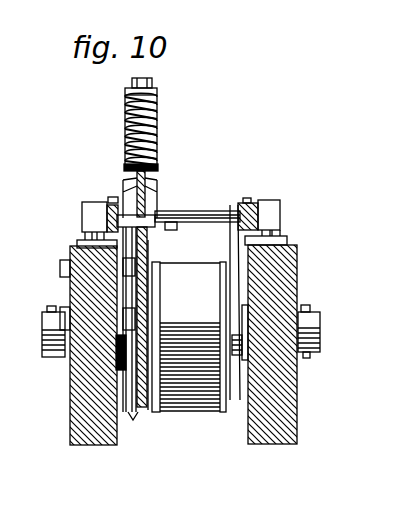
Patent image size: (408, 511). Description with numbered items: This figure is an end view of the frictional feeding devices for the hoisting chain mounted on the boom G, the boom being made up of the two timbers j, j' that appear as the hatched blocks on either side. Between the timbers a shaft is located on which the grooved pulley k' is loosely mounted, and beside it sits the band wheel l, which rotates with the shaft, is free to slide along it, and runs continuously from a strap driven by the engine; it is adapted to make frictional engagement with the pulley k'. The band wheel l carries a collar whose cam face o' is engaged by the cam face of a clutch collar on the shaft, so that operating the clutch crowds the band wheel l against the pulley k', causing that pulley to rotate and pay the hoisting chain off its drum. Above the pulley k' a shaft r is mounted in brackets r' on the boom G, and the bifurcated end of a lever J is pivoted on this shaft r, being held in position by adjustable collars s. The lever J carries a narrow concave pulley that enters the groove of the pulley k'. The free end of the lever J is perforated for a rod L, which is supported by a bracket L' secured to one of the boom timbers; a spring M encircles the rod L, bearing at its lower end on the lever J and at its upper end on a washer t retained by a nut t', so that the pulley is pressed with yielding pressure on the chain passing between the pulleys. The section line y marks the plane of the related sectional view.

The nut t' is at (144, 72).
The washer t is at (145, 84).
The rod L is at (153, 129).
The spring M is at (137, 118).
The lever J is at (160, 197).
The adjustable collars s is at (114, 197).
The brackets r' is at (182, 212).
The bracket L' is at (103, 215).
The shaft r is at (197, 204).
The band wheel l is at (165, 262).
The timber j' is at (77, 345).
The timber j is at (278, 344).
The section line y is at (174, 331).
The pulley k' is at (148, 319).
The cam face o' is at (202, 314).
The boom G is at (315, 407).